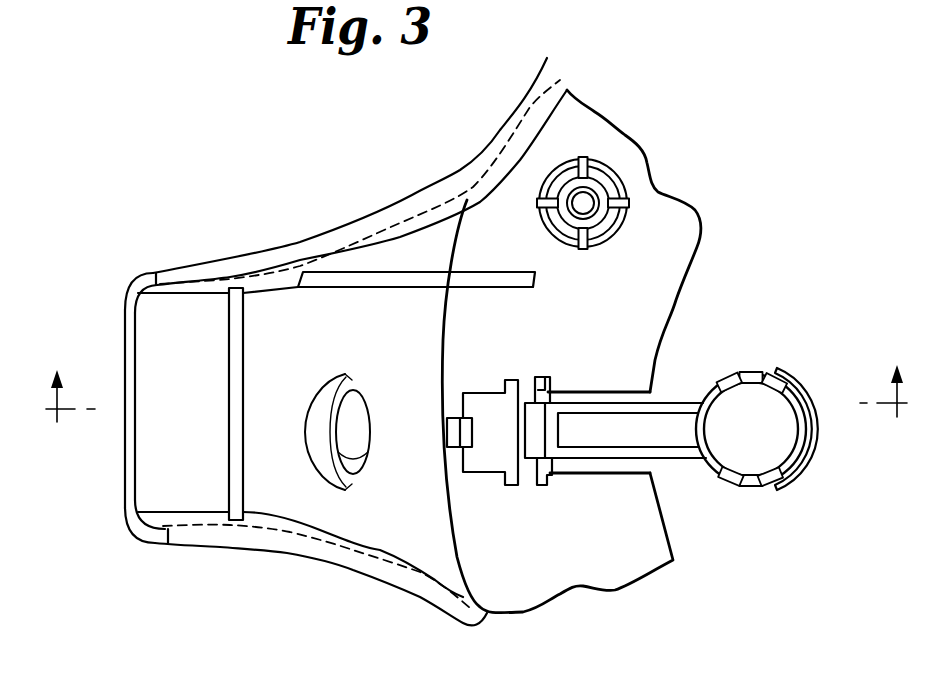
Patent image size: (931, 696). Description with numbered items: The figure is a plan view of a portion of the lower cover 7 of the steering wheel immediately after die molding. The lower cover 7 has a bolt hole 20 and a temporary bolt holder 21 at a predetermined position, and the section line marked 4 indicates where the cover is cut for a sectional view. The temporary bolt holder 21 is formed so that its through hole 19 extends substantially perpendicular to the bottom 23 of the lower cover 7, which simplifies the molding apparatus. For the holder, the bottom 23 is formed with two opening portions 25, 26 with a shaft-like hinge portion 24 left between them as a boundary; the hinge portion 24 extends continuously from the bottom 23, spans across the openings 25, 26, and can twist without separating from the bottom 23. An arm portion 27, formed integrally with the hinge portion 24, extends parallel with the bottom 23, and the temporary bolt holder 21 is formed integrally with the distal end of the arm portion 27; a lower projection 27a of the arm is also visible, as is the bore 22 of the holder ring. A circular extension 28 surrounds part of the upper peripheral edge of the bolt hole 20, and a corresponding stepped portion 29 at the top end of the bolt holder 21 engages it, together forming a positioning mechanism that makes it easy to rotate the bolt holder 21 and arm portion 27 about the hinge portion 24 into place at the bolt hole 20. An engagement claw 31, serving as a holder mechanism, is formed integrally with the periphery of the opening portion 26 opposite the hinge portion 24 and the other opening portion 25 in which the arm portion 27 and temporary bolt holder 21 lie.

The section line 4- 4 is at (476, 409).
The lower cover 7 is at (410, 191).
The through hole 19 is at (728, 392).
The bolt hole 20 is at (362, 436).
The temporary bolt holder 21 is at (718, 485).
The bore of ring 22 is at (750, 386).
The bottom 23 is at (580, 588).
The hinge portion 24 is at (541, 377).
The opening portion 25 is at (597, 394).
The opening portion 26 is at (478, 396).
The arm portion 27 is at (683, 402).
The lower projection of rod 27a is at (543, 442).
The circular extension 28 is at (363, 457).
The stepped portion 29 is at (807, 390).
The engagement claw 31 is at (474, 440).